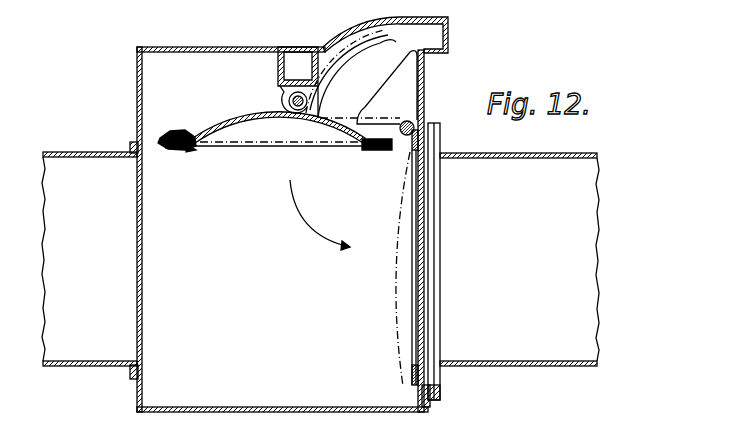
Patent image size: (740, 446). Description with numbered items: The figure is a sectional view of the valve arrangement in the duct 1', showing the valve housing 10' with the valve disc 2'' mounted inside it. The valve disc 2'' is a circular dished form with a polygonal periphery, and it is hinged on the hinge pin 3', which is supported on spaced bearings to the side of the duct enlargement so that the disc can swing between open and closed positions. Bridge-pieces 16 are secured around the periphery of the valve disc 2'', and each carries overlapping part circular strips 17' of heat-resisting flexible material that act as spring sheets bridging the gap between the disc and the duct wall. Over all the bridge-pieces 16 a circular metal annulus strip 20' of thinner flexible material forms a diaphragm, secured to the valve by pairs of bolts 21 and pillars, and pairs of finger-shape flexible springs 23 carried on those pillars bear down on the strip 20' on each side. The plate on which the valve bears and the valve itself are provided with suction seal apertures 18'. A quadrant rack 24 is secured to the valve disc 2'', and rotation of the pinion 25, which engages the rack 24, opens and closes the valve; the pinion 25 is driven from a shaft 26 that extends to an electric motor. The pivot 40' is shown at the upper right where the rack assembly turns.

The duct 1' is at (90, 266).
The valve housing 10' is at (292, 214).
The valve disc 2'' is at (296, 123).
The hinge pin 3' is at (512, 252).
The bridge-pieces 16 is at (372, 150).
The part circular strips 17' is at (183, 161).
The suction seal apertures 18' is at (302, 261).
The circular metal annulus strip 20' is at (284, 116).
The bolts 21 is at (190, 133).
The finger-shape flexible springs 23 is at (178, 132).
The quadrant rack 24 is at (378, 77).
The pinion 25 is at (289, 101).
The shaft 26 is at (301, 95).
The pivot pin 40' is at (430, 111).